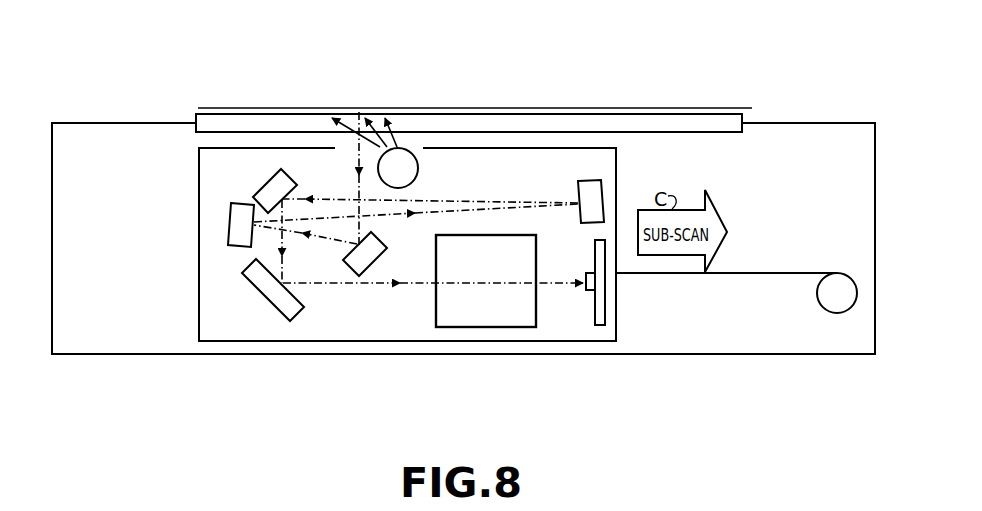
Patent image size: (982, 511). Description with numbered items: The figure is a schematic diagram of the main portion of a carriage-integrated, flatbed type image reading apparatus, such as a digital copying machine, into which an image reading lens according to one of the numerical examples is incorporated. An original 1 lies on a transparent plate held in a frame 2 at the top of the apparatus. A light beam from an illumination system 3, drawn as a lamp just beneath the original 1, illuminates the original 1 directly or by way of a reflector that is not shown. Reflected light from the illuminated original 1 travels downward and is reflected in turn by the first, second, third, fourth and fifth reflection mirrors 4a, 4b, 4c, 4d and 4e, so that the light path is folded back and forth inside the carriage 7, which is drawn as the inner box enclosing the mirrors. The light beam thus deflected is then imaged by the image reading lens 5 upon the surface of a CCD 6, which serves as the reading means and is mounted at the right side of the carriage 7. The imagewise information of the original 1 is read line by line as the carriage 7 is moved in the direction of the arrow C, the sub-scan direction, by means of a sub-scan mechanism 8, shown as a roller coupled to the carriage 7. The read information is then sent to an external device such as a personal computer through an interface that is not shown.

The original 1 is at (318, 109).
The glass holder / frame 2 is at (217, 123).
The illumination system 3 is at (407, 170).
The first reflection mirror 4a is at (355, 267).
The second reflection mirror 4b is at (228, 232).
The third reflection mirror 4c is at (592, 203).
The fourth reflection mirror 4d is at (265, 192).
The fifth reflection mirror 4e is at (257, 278).
The image reading lens 5 is at (457, 322).
The CCD 6 is at (590, 292).
The carriage 7 is at (592, 148).
The sub-scan mechanism 8 is at (822, 308).